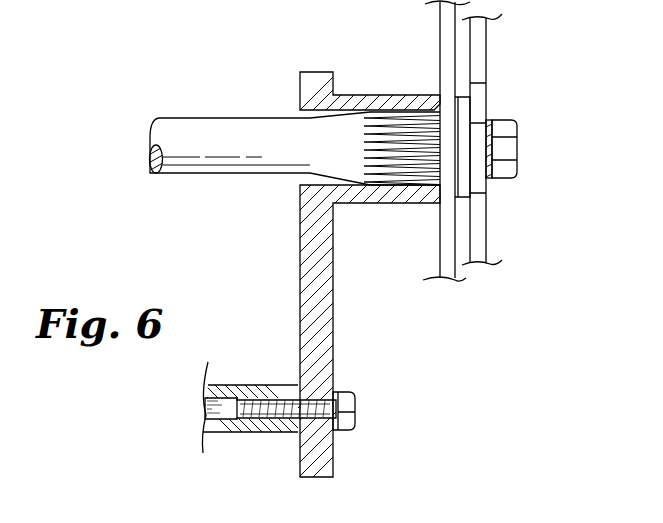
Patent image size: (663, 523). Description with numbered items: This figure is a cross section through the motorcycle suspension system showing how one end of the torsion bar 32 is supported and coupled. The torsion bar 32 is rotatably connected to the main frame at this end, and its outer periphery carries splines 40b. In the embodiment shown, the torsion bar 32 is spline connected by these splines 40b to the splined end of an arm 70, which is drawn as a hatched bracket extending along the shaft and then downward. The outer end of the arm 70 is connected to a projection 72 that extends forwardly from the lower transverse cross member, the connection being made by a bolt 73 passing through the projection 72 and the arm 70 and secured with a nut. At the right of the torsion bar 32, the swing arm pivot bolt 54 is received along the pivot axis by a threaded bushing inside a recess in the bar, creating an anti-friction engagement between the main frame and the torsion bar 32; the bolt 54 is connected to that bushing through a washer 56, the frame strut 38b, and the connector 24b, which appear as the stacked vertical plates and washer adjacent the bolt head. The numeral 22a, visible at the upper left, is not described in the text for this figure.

The support arm 22a is at (85, 10).
The connector 24b is at (445, 23).
The torsion bar 32 is at (183, 118).
The frame strut 38b is at (478, 47).
The splines 40b is at (402, 128).
The swing arm pivot bolt 54 is at (518, 147).
The washer 56 is at (486, 178).
The arm 70 is at (325, 298).
The projection 72 is at (232, 432).
The bolt 73 is at (355, 413).